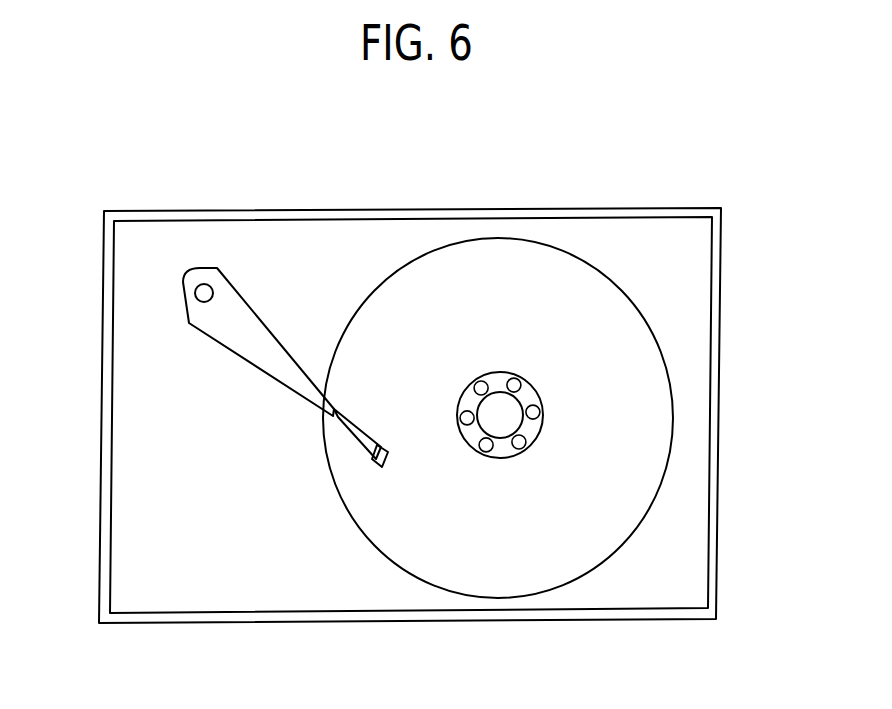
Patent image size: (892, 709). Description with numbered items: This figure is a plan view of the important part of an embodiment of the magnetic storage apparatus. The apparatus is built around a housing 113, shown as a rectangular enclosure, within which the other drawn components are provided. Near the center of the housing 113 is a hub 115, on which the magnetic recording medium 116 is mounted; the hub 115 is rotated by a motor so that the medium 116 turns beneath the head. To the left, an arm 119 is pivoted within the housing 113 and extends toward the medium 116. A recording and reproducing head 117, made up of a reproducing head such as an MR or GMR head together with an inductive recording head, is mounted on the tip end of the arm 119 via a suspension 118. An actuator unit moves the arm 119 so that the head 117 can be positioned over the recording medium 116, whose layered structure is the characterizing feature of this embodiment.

The housing 113 is at (714, 600).
The hub 115 is at (530, 393).
The magnetic recording medium 116 is at (551, 257).
The recording and reproducing head 117 is at (392, 445).
The suspension 118 is at (350, 403).
The arm 119 is at (233, 355).